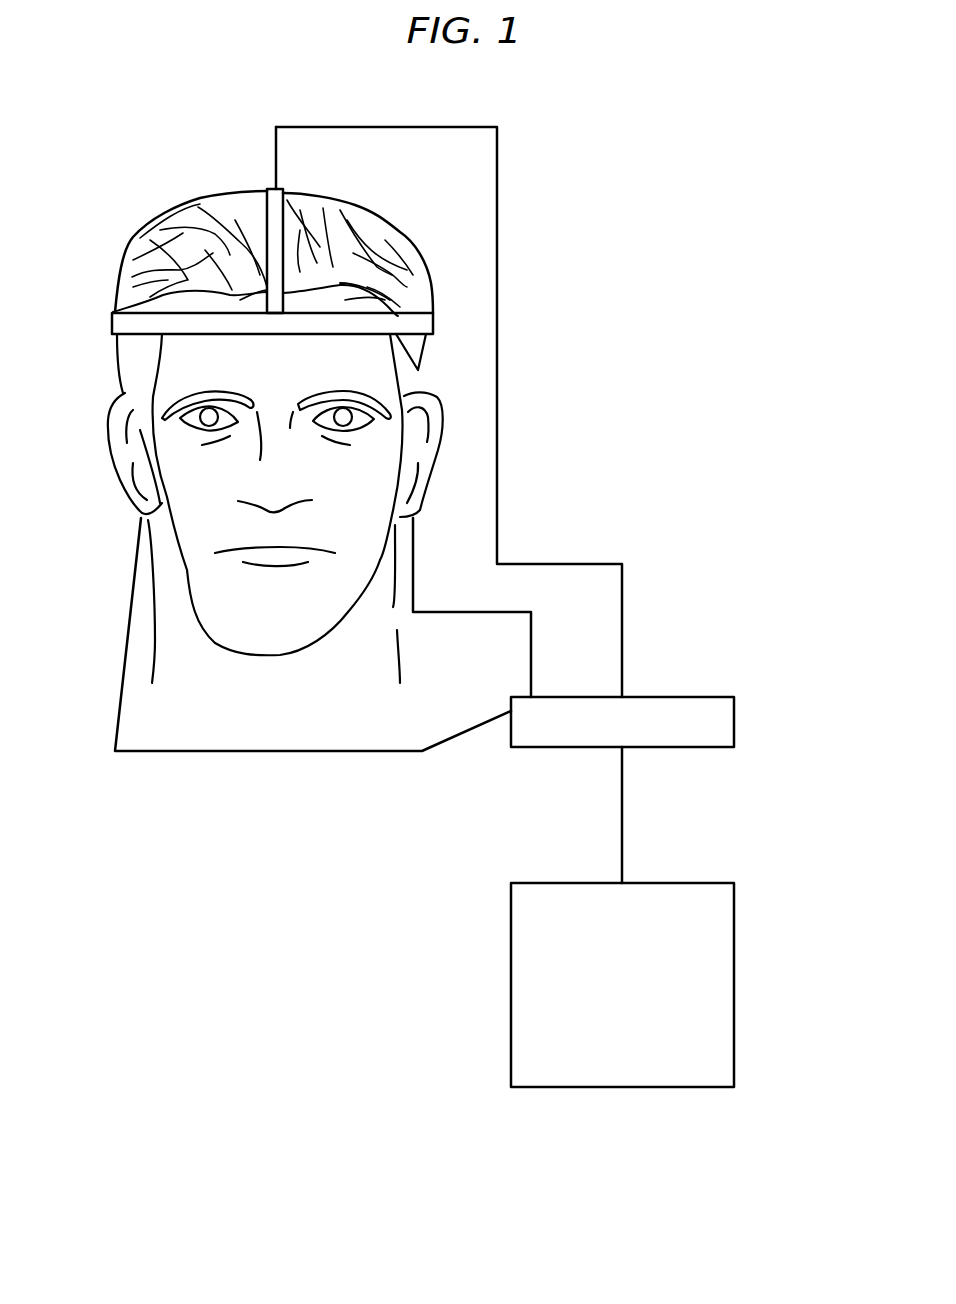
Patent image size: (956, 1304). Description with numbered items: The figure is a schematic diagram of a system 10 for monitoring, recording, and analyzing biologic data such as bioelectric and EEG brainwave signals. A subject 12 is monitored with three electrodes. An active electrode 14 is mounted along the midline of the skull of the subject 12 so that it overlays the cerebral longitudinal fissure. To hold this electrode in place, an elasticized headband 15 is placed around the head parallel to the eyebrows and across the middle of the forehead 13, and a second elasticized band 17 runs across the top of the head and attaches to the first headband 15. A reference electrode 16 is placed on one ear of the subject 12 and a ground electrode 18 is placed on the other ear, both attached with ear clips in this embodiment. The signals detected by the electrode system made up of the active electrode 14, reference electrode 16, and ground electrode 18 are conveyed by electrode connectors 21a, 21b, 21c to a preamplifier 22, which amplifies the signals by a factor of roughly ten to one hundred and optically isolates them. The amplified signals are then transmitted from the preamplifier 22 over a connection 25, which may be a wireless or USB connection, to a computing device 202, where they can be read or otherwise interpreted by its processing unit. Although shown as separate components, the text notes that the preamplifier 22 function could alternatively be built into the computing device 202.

The system 10 is at (740, 220).
The subject 12 is at (342, 221).
The forehead 13 is at (398, 316).
The active electrode 14 is at (268, 190).
The elasticized headband 15 is at (114, 320).
The reference electrode 16 is at (134, 522).
The second elasticized band 17 is at (278, 218).
The ground electrode 18 is at (420, 512).
The electrode connector 21a is at (500, 352).
The electrode connector 21b is at (210, 752).
The electrode connector 21c is at (453, 611).
The preamplifier 22 is at (735, 720).
The connection 25 is at (623, 753).
The computing device 202 is at (735, 908).